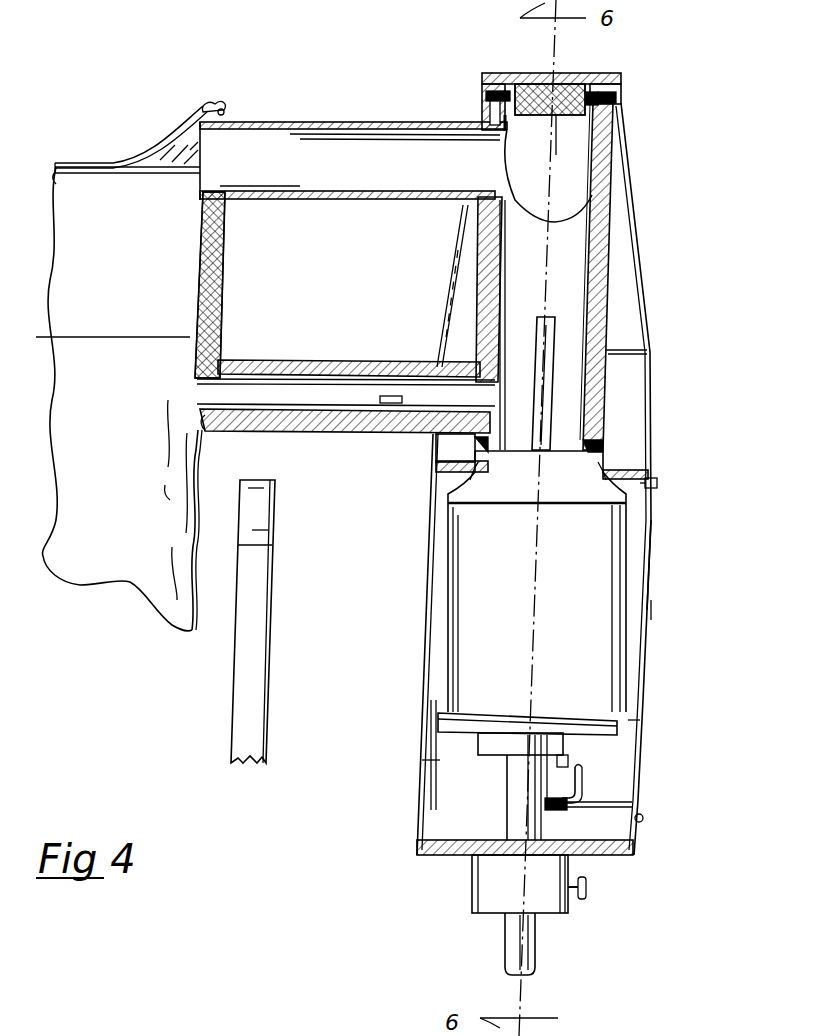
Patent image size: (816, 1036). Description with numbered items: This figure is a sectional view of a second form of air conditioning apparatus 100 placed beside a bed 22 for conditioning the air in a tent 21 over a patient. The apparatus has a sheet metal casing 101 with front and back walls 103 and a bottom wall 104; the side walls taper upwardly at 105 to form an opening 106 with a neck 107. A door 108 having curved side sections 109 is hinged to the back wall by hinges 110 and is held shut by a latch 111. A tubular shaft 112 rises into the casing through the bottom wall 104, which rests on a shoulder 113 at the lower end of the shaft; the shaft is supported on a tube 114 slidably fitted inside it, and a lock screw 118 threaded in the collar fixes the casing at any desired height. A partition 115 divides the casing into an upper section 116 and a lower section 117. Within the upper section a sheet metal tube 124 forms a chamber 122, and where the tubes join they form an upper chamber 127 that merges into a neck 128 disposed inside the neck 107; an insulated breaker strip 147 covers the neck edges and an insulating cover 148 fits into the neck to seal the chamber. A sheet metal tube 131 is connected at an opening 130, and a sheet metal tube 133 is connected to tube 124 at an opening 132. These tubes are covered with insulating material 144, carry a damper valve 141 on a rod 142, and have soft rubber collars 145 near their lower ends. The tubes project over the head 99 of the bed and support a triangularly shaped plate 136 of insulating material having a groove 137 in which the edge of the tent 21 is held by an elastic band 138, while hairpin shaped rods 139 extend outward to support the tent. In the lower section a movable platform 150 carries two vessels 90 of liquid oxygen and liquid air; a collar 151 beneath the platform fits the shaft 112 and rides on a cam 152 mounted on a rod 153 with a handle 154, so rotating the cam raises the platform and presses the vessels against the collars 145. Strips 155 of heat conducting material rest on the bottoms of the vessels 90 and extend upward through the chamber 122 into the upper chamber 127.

The tent 21 is at (166, 140).
The bed 22 is at (253, 703).
The vessel 90 is at (536, 500).
The head of the bed 99 is at (272, 525).
The air conditioning apparatus 100 is at (688, 891).
The casing 101 is at (460, 808).
The front and back walls 103 is at (646, 388).
The bottom wall 104 is at (428, 850).
The tapered side walls 105 is at (636, 262).
The opening 106 is at (612, 108).
The neck 107 is at (618, 100).
The door 108 is at (648, 600).
The curved side sections 109 is at (612, 760).
The hinges 110 is at (643, 814).
The latch 111 is at (658, 485).
The tubular shaft 112 is at (516, 798).
The shoulder 113 is at (492, 893).
The tube 114 is at (520, 945).
The partition 115 is at (630, 472).
The upper section 116 is at (620, 330).
The lower section 117 is at (625, 665).
The lock screw 118 is at (586, 892).
The chamber 122 is at (568, 290).
The sheet metal tube 124 is at (590, 236).
The upper chamber 127 is at (556, 153).
The neck 128 is at (500, 106).
The opening 130 is at (515, 198).
The sheet metal tube 131 is at (396, 150).
The opening 132 is at (497, 410).
The sheet metal tube 133 is at (268, 395).
The triangularly shaped plate 136 is at (220, 270).
The groove 137 is at (226, 110).
The elastic band 138 is at (210, 103).
The hairpin shaped rods 139 is at (115, 176).
The damper valve 141 is at (392, 403).
The rod 142 is at (394, 395).
The insulating material 144 is at (318, 362).
The rubber collars 145 is at (600, 447).
The insulated breaker strip 147 is at (483, 93).
The insulating cover 148 is at (505, 73).
The movable platform 150 is at (480, 725).
The collar 151 is at (504, 745).
The cam 152 is at (568, 762).
The rod 153 is at (552, 806).
The handle 154 is at (584, 779).
The strips 155 is at (560, 378).